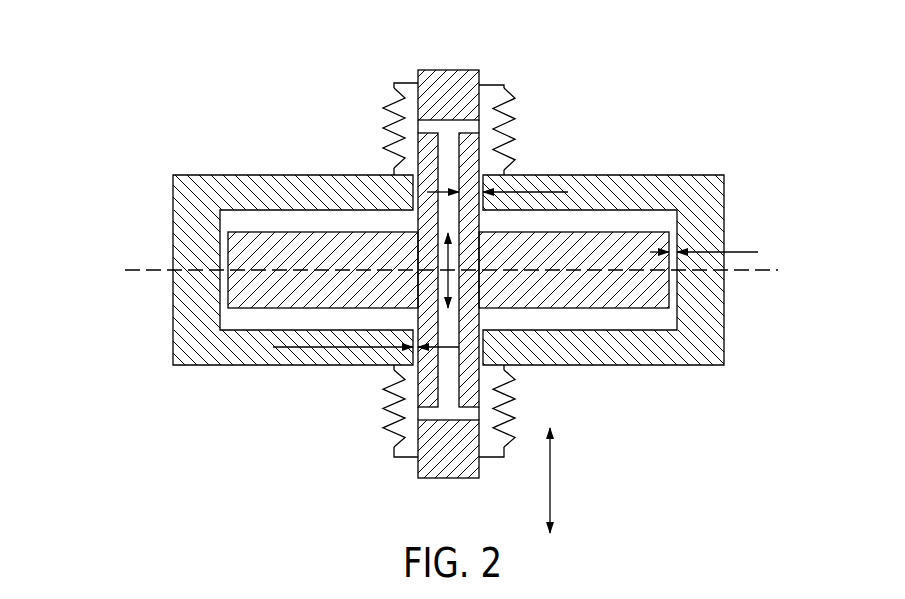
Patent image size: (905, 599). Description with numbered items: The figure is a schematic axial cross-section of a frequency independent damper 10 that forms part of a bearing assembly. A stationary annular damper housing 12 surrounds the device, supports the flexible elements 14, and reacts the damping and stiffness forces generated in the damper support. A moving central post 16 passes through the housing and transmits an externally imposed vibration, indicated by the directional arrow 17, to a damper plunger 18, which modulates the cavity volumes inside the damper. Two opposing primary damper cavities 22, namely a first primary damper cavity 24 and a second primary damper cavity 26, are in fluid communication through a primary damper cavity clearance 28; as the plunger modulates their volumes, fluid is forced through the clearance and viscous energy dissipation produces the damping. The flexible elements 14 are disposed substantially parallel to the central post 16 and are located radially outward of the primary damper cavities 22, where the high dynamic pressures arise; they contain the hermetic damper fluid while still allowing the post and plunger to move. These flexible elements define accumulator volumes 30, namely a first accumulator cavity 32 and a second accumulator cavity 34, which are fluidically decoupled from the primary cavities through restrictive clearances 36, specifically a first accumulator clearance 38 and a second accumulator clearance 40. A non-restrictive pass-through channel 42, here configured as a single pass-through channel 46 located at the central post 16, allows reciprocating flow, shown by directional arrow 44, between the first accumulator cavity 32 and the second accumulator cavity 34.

The frequency independent damper 10 is at (692, 57).
The stationary annular damper housing 12 is at (460, 274).
The flexible elements 14 is at (504, 108).
The central post 16 is at (452, 70).
The directional arrow 17 is at (550, 483).
The damper plunger 18 is at (238, 244).
The primary damper cavities 22 is at (615, 277).
The first primary damper cavity 24 is at (645, 197).
The second primary damper cavity 26 is at (665, 320).
The primary damper cavity clearance 28 is at (743, 252).
The accumulator volumes 30 is at (341, 282).
The first accumulator cavity 32 is at (393, 113).
The second accumulator cavity 34 is at (392, 410).
The restrictive clearances 36 is at (438, 270).
The first accumulator clearance 38 is at (553, 192).
The second accumulator clearance 40 is at (307, 347).
The non-restrictive pass-through channel 42 is at (524, 411).
The directional arrow 44 is at (448, 277).
The single pass-through channel 46 is at (450, 378).